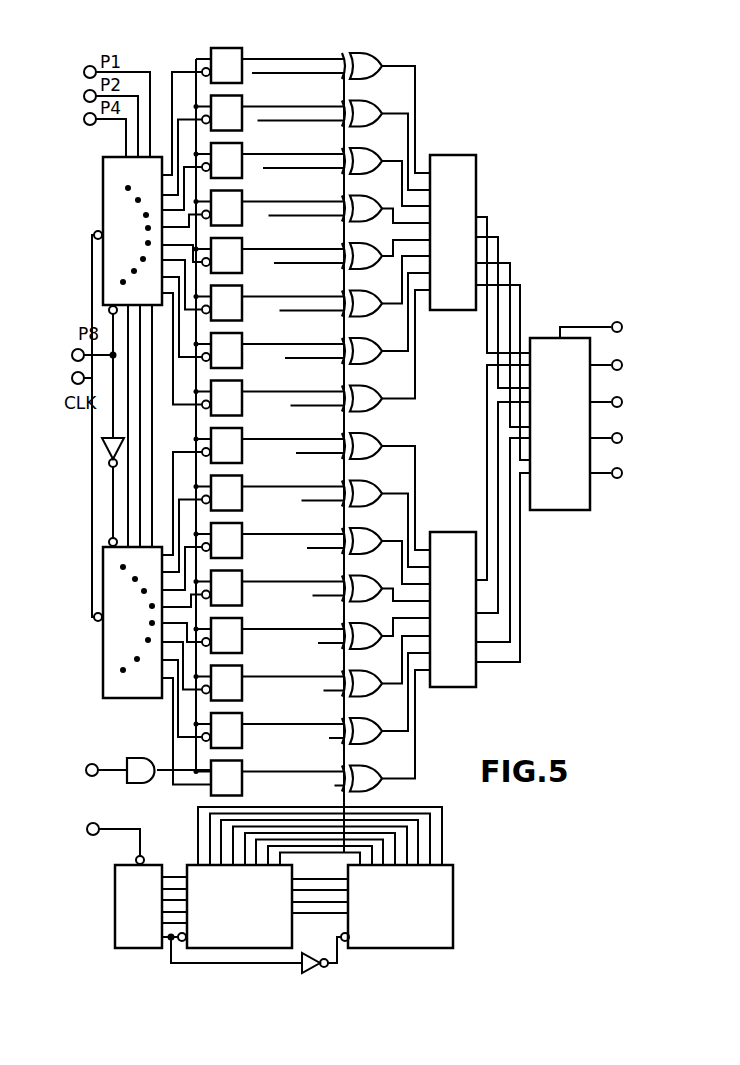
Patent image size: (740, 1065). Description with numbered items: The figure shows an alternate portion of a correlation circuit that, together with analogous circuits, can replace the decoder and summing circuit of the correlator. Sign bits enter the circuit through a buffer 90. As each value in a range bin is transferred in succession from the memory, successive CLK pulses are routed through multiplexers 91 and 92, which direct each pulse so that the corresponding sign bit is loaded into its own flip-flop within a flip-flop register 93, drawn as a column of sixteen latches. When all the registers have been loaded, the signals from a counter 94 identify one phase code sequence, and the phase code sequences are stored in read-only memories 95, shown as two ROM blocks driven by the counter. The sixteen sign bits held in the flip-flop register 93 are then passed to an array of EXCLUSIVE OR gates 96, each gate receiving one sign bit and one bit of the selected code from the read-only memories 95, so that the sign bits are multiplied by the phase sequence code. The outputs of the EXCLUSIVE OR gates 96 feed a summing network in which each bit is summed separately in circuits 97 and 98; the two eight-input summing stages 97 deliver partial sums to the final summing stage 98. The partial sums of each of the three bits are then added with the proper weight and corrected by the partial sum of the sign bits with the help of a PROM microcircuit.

The buffer 90 is at (137, 773).
The multiplexer 91 is at (132, 246).
The multiplexer 92 is at (137, 636).
The flip-flop register 93 is at (225, 39).
The counter 94 is at (117, 923).
The read-only memories 95 is at (255, 942).
The EXCLUSIVE OR gates 96 is at (389, 51).
The summing circuit 97 is at (482, 165).
The summing circuit 98 is at (567, 512).